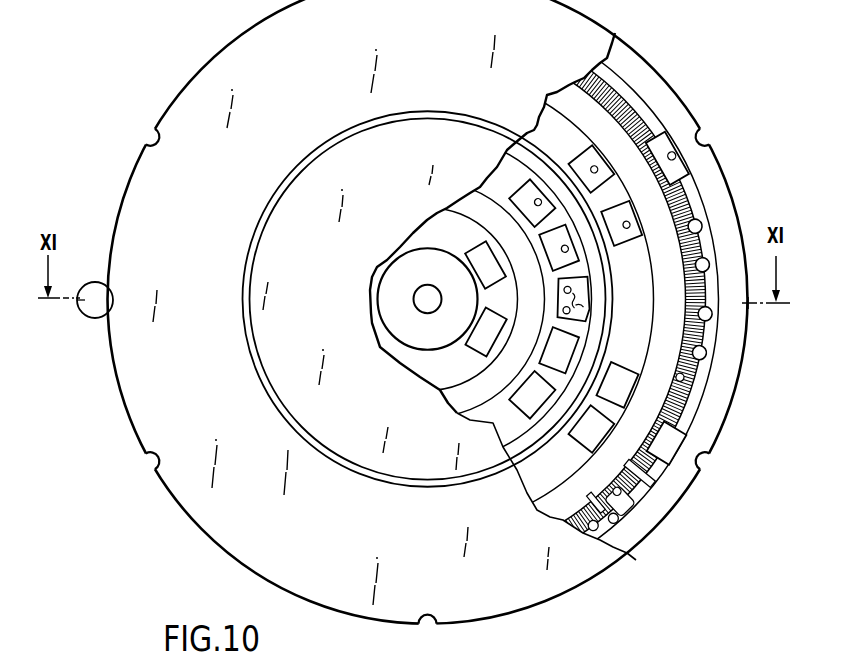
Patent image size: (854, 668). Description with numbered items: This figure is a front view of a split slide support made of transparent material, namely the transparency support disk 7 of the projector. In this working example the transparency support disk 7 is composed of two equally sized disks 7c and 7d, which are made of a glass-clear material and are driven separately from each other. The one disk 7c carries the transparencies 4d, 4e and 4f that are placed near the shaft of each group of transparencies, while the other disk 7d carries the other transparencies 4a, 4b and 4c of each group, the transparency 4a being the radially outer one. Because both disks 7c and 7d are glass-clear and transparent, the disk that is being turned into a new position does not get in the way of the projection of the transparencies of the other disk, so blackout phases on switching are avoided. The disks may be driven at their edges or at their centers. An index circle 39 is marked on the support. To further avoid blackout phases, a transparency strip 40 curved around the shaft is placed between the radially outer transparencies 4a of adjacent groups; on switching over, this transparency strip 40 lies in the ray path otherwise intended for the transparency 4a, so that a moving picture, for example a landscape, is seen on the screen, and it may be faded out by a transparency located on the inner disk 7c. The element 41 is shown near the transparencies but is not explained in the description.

The transparency support disk 7 is at (688, 52).
The disk 7c is at (287, 205).
The disk 7d is at (137, 232).
The index circle 39 is at (327, 143).
The transparency strip 40 is at (703, 340).
The sensor element 41 is at (583, 288).
The transparency 4a is at (672, 458).
The transparency 4b is at (626, 400).
The transparency 4c is at (600, 443).
The transparency 4d is at (568, 363).
The transparency 4e is at (543, 405).
The transparency 4f is at (492, 357).